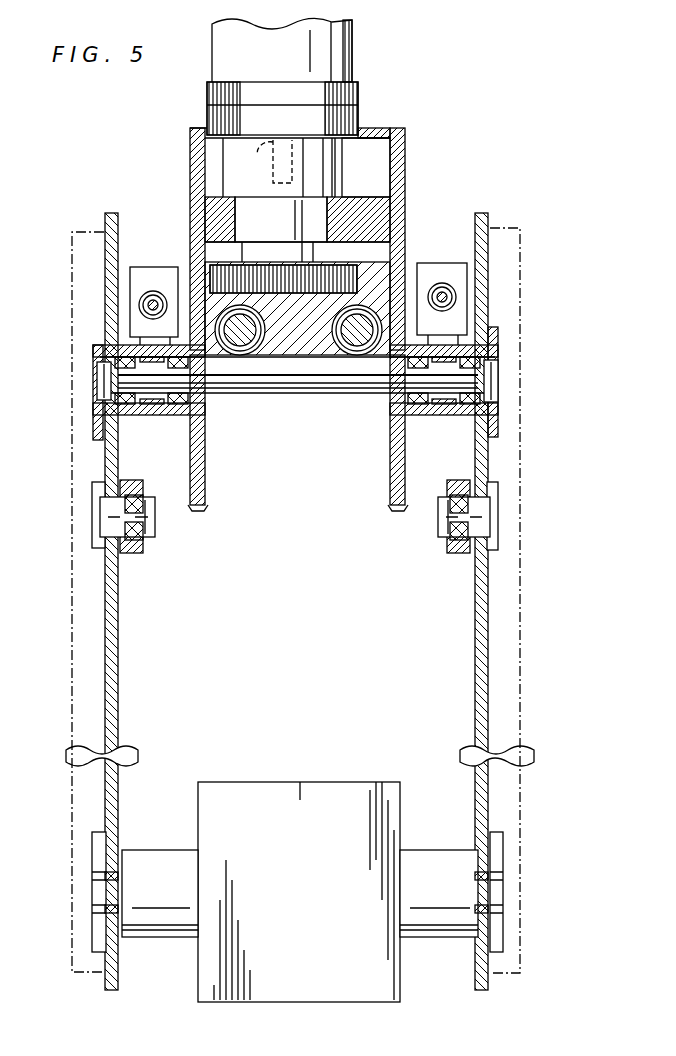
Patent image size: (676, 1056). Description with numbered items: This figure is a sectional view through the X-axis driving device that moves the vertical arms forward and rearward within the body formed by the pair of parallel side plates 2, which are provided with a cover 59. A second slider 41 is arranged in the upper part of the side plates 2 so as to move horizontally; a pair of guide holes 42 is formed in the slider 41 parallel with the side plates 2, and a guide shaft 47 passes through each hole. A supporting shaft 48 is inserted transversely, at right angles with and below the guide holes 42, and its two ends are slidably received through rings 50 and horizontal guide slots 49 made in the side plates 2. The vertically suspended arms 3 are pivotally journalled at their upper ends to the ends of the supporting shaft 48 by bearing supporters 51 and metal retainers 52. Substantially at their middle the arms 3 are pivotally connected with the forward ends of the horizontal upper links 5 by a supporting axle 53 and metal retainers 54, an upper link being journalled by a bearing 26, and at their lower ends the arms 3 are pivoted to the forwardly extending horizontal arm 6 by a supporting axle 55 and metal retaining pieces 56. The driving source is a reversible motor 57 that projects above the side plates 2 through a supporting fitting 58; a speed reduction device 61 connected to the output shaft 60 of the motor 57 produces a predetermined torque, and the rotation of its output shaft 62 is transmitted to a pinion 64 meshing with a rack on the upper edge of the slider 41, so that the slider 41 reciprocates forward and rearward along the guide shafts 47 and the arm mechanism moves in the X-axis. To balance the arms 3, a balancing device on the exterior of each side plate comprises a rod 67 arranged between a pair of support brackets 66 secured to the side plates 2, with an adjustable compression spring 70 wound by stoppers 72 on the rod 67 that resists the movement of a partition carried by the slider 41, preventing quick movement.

The side plates 2 is at (190, 142).
The vertical arms 3 is at (118, 630).
The horizontal upper links 5 is at (135, 554).
The arm 6 is at (272, 782).
The bearing 26 is at (143, 555).
The second slider 41 is at (322, 408).
The guide holes 42 is at (258, 352).
The guide shafts 47 is at (236, 345).
The supporting shaft 48 is at (300, 380).
The guide slots 49 is at (188, 418).
The rings 50 is at (208, 404).
The bearing supporters 51 is at (168, 406).
The metal retainers 52 is at (100, 382).
The supporting axle 53 is at (110, 516).
The metal retainers 54 is at (96, 532).
The supporting axle 55 is at (447, 938).
The metal retaining pieces 56 is at (96, 893).
The reversible motor 57 is at (350, 52).
The supporting fitting 58 is at (355, 115).
The cover 59 is at (72, 488).
The output shaft 60 is at (258, 142).
The speed reduction device 61 is at (336, 180).
The output shaft 62 is at (265, 252).
The pinion 64 is at (222, 268).
The support brackets 66 is at (146, 268).
The rod 67 is at (152, 292).
The compression spring 70 is at (146, 304).
The stoppers 72 is at (138, 318).